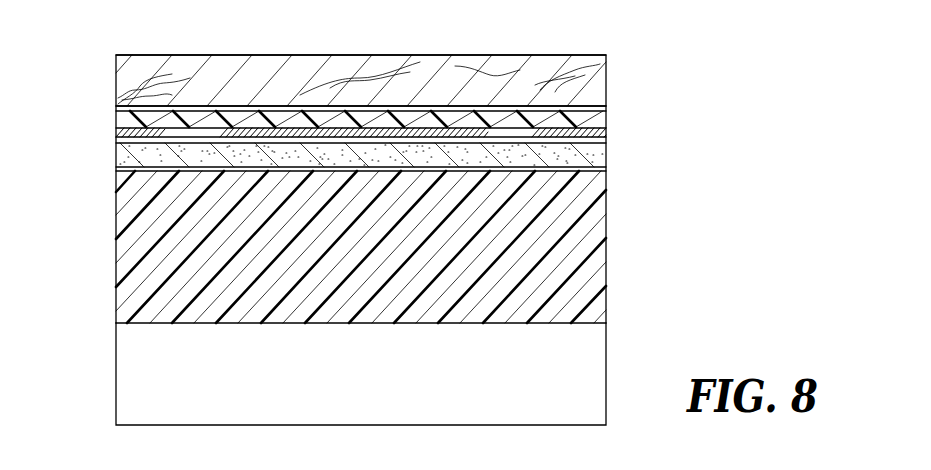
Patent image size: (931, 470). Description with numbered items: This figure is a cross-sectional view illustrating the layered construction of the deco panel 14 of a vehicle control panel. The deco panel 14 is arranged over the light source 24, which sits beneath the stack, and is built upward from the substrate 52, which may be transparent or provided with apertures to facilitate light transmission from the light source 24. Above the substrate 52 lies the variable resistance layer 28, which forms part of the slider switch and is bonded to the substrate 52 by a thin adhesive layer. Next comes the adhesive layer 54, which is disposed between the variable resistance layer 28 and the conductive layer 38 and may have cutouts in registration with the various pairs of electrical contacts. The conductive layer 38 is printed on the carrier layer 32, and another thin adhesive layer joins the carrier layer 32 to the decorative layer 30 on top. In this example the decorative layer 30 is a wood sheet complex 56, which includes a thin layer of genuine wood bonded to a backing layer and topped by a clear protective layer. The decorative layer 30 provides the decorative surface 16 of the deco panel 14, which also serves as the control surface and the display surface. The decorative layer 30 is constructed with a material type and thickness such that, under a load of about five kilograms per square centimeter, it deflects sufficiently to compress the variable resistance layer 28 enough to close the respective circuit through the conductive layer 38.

The deco panel 14 is at (103, 58).
The decorative surface 16 is at (210, 55).
The light source 24 is at (606, 402).
The variable resistance layer 28 is at (116, 155).
The decorative layer 30 is at (453, 60).
The carrier layer 32 is at (555, 117).
The conductive layer 38 is at (350, 130).
The substrate 52 is at (606, 302).
The adhesive layer 54 is at (606, 141).
The wood sheet complex 56 is at (622, 57).